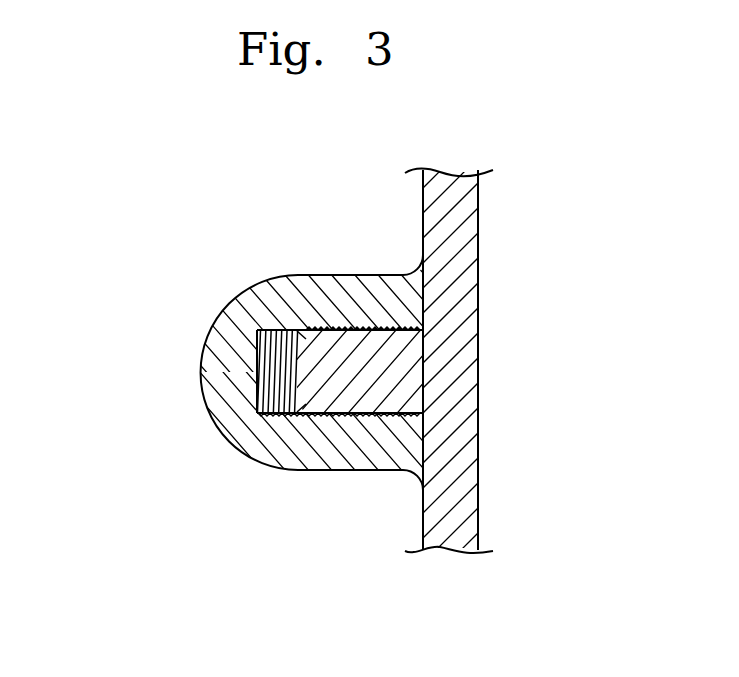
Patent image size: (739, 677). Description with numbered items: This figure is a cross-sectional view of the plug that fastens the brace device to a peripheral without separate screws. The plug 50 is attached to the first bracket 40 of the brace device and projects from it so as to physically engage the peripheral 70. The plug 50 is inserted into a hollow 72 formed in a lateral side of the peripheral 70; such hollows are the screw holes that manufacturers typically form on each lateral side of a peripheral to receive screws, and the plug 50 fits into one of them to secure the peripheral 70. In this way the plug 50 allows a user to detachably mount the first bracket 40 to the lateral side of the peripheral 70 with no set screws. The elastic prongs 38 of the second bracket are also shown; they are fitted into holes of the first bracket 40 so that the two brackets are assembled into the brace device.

The peripheral 70 is at (352, 226).
The elastic prongs 38 is at (468, 254).
The first bracket 40 is at (498, 385).
The plug 50 is at (265, 429).
The hollow 72 is at (262, 363).